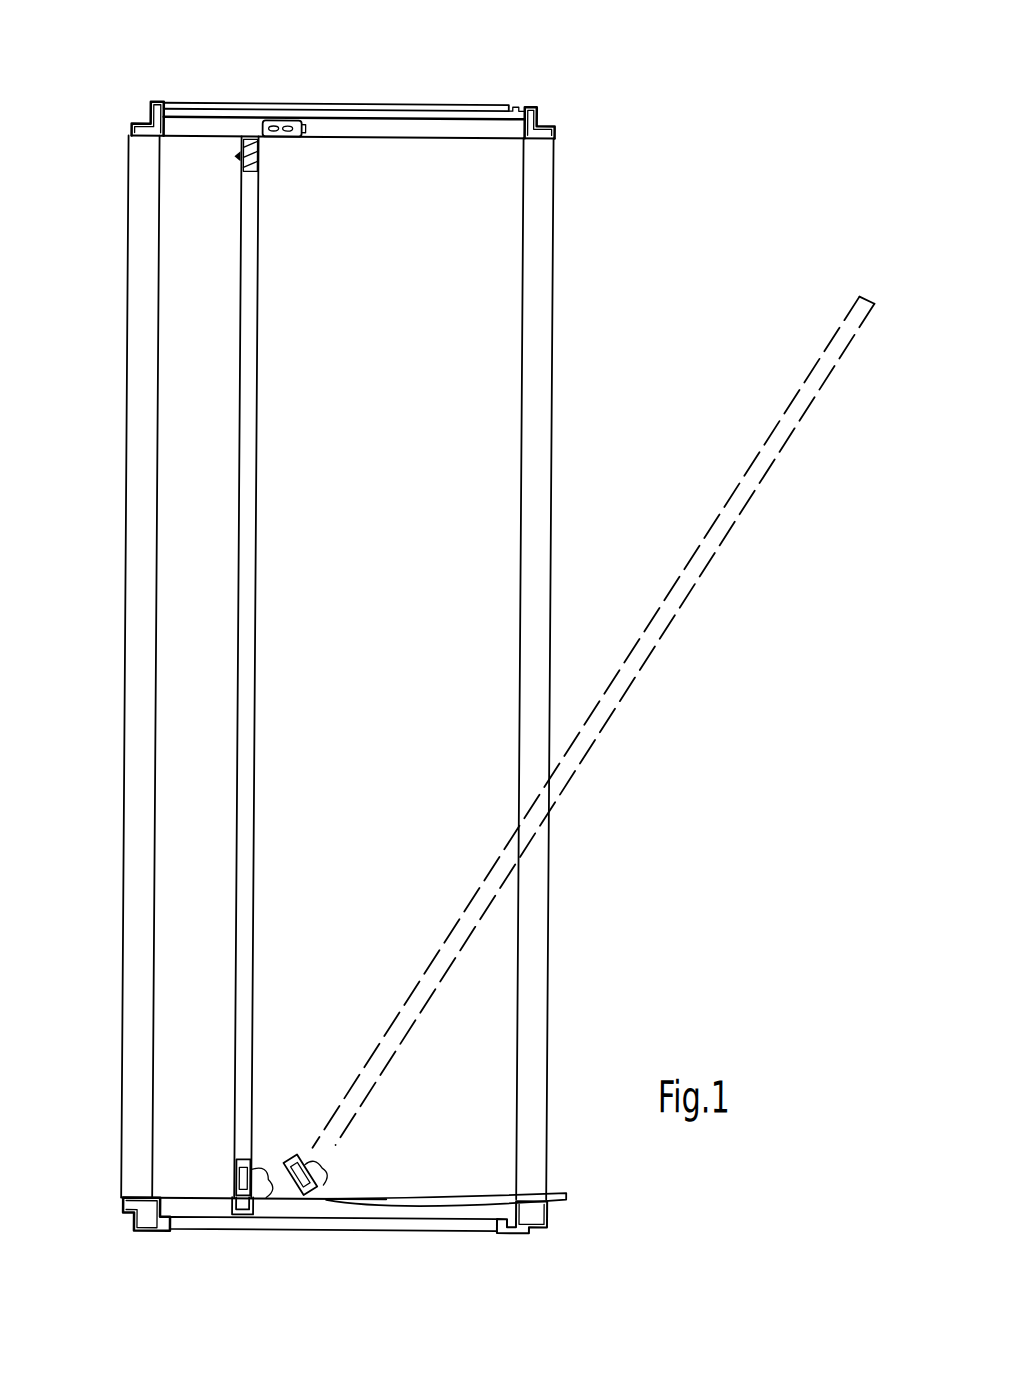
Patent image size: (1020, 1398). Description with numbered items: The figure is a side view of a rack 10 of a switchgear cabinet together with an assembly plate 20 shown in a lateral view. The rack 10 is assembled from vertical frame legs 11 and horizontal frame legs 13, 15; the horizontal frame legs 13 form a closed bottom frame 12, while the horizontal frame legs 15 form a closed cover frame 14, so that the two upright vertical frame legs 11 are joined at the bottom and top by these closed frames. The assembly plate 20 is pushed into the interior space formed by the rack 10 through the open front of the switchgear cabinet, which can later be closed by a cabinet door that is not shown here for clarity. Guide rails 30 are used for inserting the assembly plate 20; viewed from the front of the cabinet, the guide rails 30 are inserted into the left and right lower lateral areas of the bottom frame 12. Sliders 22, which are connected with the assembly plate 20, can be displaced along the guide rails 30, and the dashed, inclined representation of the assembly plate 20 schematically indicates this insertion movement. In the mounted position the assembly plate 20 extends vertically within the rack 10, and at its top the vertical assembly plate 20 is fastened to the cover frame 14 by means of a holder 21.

The rack 10 is at (630, 258).
The vertical frame legs 11 is at (136, 345).
The bottom frame 12 is at (145, 1247).
The horizontal frame legs 13 is at (129, 1212).
The cover frame 14 is at (190, 79).
The horizontal frame legs 15 is at (139, 117).
The assembly plate 20 is at (250, 434).
The holder 21 is at (279, 142).
The sliders 22 is at (265, 1175).
The guide rails 30 is at (420, 1194).